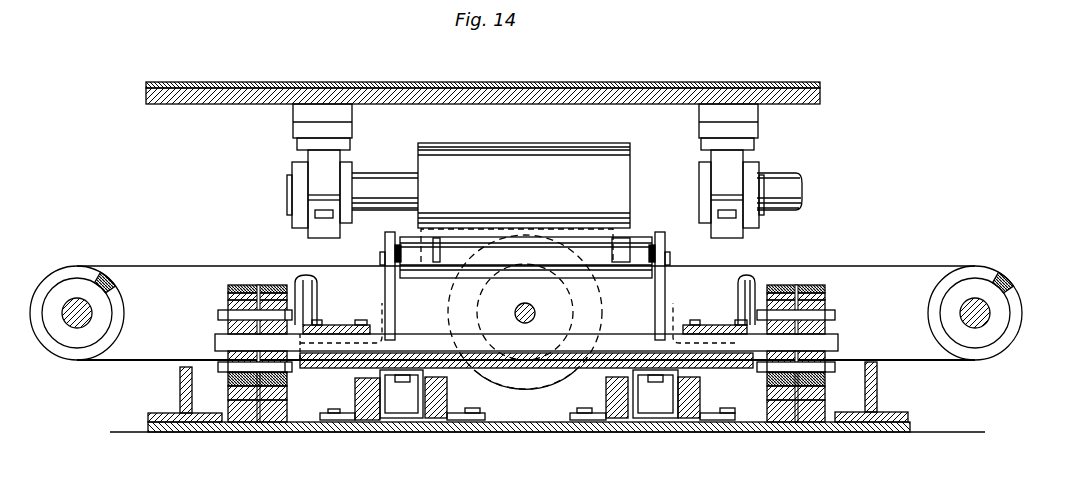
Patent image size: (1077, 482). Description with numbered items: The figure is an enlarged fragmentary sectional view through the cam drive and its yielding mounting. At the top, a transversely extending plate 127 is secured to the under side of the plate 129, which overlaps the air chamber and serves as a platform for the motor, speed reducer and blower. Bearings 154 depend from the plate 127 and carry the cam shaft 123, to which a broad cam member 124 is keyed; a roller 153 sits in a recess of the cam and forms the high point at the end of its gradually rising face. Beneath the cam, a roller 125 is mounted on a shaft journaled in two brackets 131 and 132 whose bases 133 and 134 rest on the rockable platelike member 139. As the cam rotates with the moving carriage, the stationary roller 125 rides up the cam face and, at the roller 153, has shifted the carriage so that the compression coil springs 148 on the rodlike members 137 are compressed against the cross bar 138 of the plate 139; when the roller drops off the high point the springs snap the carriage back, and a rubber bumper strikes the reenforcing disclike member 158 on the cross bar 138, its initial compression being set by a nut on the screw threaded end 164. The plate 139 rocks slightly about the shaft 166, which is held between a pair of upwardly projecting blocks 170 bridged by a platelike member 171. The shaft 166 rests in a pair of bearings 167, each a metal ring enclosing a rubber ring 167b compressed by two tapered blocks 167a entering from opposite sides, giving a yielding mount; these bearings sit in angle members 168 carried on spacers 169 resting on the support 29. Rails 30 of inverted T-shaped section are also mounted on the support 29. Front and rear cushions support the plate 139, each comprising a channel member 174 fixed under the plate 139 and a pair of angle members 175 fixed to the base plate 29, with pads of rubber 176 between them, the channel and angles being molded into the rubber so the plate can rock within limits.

The support 29 is at (197, 434).
The rails 30 is at (180, 385).
The cam shaft 123 is at (777, 177).
The cam member 124 is at (418, 145).
The roller 125 is at (467, 242).
The transversely extending plate 127 is at (292, 90).
The plate 129 is at (428, 68).
The bracket 131 is at (665, 240).
The bracket 132 is at (385, 243).
The base 133 is at (700, 351).
The base 134 is at (300, 348).
The rodlike members 137 is at (72, 308).
The cross bar 138 is at (278, 266).
The platelike member 139 is at (458, 372).
The compression coil springs 148 is at (75, 277).
The roller 153 is at (452, 287).
The bearings 154 is at (310, 156).
The reenforcing disclike member 158 is at (600, 295).
The screw threaded end 164 is at (516, 308).
The shaft 166 is at (215, 338).
The bearings 167 is at (228, 288).
The tapered blocks 167a is at (767, 298).
The rubber ring 167b is at (825, 291).
The angle members 168 is at (296, 403).
The spacers 169 is at (250, 420).
The blocks 170 is at (382, 322).
The platelike member 171 is at (318, 323).
The channel member 174 is at (668, 382).
The angle members 175 is at (728, 420).
The pads of rubber 176 is at (425, 432).